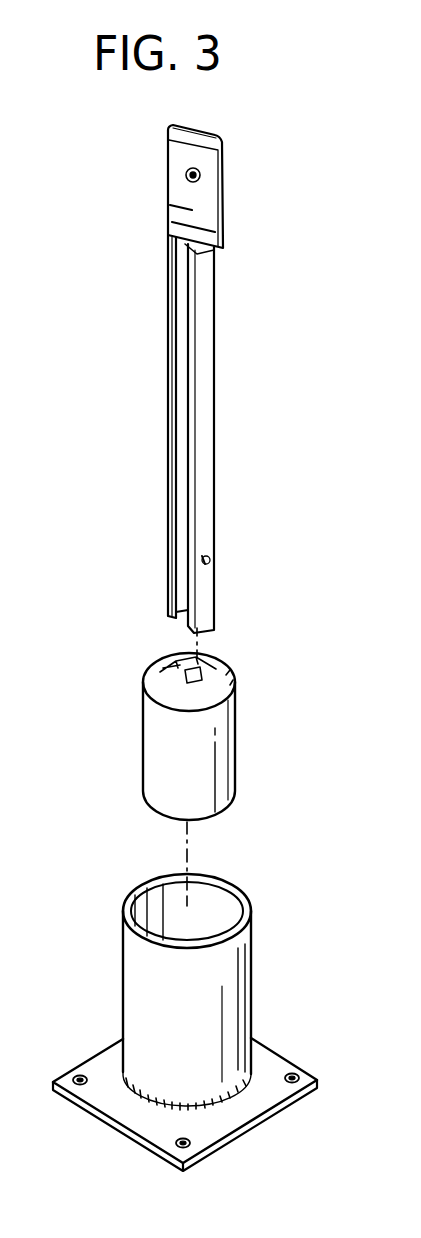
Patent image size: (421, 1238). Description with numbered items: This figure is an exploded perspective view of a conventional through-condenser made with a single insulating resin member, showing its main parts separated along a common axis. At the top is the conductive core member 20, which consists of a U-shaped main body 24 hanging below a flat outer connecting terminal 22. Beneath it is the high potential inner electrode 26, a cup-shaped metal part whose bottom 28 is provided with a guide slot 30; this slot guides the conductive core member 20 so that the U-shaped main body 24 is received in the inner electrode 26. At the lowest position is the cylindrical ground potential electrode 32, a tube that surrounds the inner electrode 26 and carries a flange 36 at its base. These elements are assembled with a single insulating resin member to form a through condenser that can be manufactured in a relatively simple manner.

The conductive core member 20 is at (214, 432).
The flat outer connecting terminal 22 is at (212, 196).
The U-shaped main body 24 is at (175, 343).
The high potential inner electrode 26 is at (143, 778).
The bottom 28 is at (238, 676).
The guide slot 30 is at (178, 660).
The cylindrical ground potential electrode 32 is at (250, 1007).
The flange 36 is at (126, 1115).